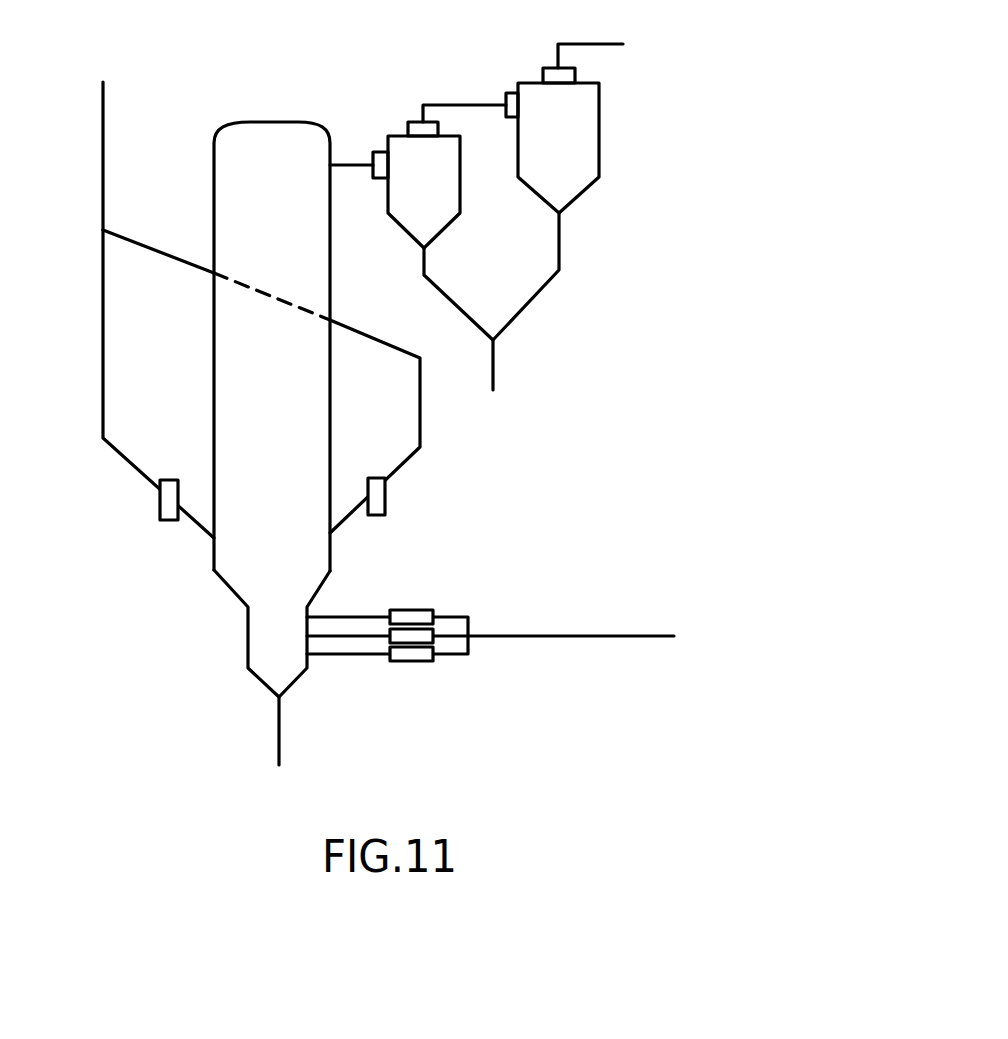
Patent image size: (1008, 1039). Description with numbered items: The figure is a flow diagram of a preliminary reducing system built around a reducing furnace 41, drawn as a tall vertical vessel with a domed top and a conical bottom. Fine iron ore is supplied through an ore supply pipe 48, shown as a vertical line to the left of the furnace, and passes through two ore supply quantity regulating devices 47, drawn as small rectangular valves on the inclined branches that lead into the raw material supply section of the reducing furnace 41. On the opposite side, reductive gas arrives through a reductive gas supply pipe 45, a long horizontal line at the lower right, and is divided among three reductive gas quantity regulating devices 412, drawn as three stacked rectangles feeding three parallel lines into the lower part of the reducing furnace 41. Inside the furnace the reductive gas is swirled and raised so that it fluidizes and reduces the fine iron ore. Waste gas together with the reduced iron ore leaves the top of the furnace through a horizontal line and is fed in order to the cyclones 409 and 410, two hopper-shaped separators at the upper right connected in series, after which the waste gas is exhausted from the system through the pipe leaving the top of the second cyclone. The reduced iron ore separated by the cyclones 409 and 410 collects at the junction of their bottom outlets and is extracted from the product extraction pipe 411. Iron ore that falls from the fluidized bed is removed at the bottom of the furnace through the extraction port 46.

The reducing furnace 41 is at (288, 122).
The reductive gas supply pipe 45 is at (590, 636).
The extraction port 46 is at (280, 727).
The ore supply quantity regulating devices 47 is at (160, 510).
The ore supply pipe 48 is at (103, 164).
The cyclone 409 is at (460, 200).
The cyclone 410 is at (599, 163).
The product extraction pipe 411 is at (493, 370).
The reductive gas quantity regulating devices 412 is at (420, 610).